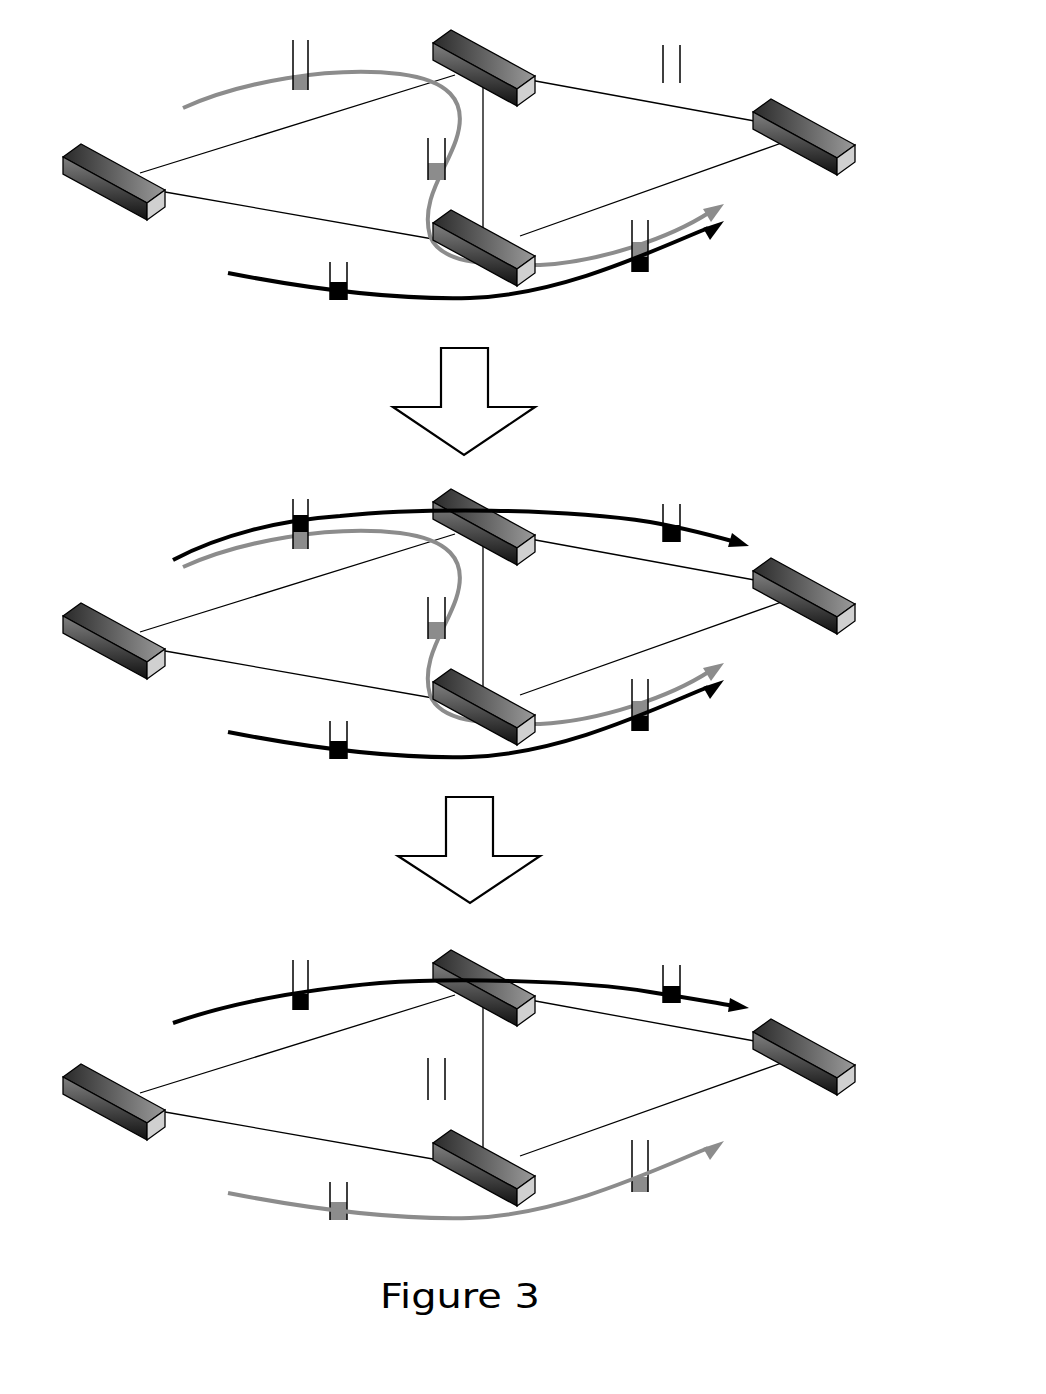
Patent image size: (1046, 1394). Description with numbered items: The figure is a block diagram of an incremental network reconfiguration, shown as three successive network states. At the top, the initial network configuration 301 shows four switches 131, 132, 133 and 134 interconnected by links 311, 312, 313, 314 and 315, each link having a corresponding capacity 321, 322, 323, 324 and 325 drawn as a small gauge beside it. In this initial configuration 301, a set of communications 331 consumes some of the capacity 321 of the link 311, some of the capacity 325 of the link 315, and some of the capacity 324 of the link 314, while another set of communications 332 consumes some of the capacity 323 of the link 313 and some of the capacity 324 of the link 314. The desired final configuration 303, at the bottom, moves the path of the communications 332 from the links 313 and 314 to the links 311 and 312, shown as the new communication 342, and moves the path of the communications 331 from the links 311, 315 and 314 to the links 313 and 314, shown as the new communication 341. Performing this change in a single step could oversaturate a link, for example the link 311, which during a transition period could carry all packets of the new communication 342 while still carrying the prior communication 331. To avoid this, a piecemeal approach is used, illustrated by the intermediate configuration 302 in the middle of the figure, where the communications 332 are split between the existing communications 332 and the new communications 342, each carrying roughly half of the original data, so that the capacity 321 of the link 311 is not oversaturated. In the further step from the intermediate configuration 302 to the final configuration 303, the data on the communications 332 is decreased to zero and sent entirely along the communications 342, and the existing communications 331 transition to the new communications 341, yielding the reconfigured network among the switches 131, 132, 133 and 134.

The initial network configuration 301 is at (158, 63).
The intermediate configuration 302 is at (106, 510).
The final configuration 303 is at (106, 971).
The switch 131 is at (93, 146).
The switch 132 is at (488, 94).
The switch 133 is at (818, 117).
The switch 134 is at (445, 255).
The link 311 is at (278, 134).
The link 312 is at (602, 97).
The link 313 is at (285, 212).
The link 314 is at (588, 207).
The link 315 is at (484, 141).
The capacity 321 is at (330, 62).
The capacity 322 is at (649, 70).
The capacity 323 is at (312, 279).
The capacity 324 is at (664, 233).
The capacity 325 is at (410, 168).
The set of communications 331 is at (215, 109).
The set of communications 332 is at (246, 272).
The new communication 341 is at (462, 1179).
The new communication 342 is at (461, 764).